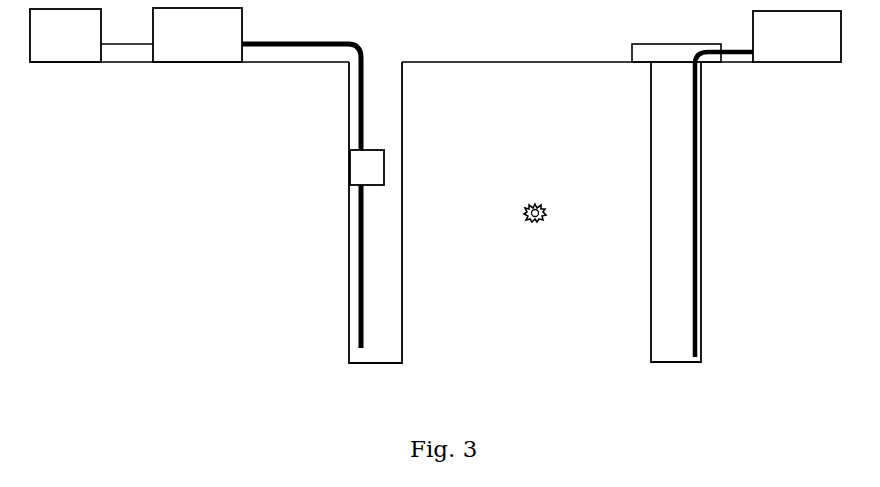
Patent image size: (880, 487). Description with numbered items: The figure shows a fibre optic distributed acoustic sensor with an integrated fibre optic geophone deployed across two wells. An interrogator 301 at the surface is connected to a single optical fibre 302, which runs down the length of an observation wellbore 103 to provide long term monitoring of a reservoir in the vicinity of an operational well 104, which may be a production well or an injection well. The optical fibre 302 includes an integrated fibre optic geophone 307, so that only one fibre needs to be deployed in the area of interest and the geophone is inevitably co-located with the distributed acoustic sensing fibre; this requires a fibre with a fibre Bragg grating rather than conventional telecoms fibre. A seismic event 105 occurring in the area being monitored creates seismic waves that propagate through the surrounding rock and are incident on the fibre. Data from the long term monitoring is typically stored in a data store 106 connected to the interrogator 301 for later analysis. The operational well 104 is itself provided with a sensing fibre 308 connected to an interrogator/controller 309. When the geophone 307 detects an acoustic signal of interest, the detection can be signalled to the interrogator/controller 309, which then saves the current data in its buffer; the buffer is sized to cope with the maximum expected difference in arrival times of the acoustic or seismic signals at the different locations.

The data store 106 is at (65, 35).
The interrogator 301 is at (197, 35).
The interrogator/controller 309 is at (797, 36).
The observation wellbore 103 is at (403, 96).
The operational well 104 is at (703, 307).
The seismic event 105 is at (543, 205).
The optical fibre 302 is at (366, 258).
The fibre optic geophone 307 is at (384, 170).
The sensing fibre 308 is at (694, 170).